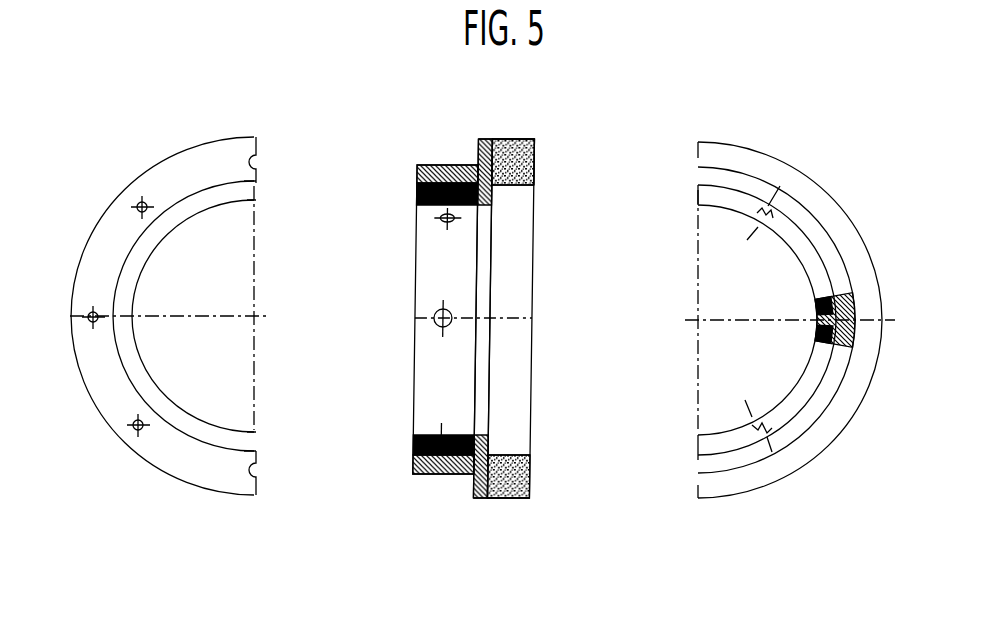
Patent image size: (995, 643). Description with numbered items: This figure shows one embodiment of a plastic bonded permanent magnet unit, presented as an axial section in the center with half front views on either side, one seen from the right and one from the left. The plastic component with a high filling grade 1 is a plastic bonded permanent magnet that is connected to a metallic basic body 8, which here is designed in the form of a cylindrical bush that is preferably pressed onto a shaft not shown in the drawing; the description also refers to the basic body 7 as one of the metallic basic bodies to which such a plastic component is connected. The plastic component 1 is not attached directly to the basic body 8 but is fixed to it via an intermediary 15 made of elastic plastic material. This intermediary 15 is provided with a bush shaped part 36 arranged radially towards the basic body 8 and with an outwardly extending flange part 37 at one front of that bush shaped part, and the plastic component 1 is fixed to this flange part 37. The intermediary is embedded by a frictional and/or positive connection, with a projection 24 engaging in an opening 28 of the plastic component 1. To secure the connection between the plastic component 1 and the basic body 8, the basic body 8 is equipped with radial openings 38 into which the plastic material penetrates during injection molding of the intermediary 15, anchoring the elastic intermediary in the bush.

The plastic component with a high filling grade 1 is at (205, 168).
The basic body 7 is at (727, 208).
The basic body 8 is at (420, 206).
The intermediary 15 is at (157, 252).
The projection 24 is at (132, 182).
The opening 28 is at (537, 176).
The bush shaped part 36 is at (432, 165).
The flange part 37 is at (477, 143).
The radial opening 38 is at (437, 472).